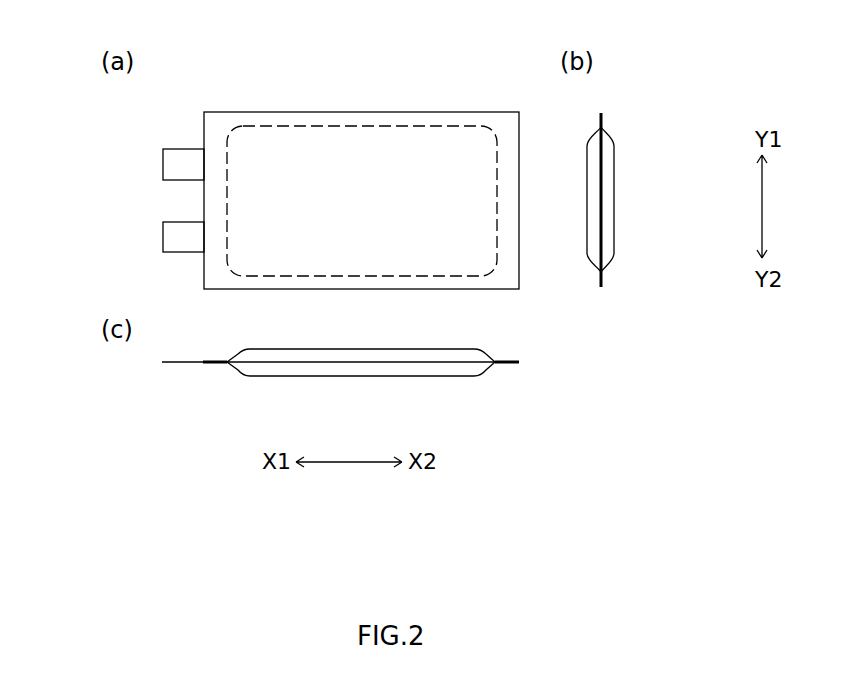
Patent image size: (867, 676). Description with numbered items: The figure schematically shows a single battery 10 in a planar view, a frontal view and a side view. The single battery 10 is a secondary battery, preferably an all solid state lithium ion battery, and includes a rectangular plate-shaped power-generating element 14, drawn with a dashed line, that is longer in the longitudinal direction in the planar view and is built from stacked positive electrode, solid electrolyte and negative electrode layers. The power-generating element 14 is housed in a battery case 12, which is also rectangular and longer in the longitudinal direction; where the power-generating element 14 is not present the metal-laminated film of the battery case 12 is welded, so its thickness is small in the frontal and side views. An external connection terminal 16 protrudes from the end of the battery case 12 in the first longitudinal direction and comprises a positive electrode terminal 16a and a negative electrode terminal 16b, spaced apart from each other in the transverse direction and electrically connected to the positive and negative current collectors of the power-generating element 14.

The single battery 10 is at (364, 244).
The battery case 12 is at (505, 276).
The power-generating element 14 is at (322, 143).
The external connection terminal 16 is at (121, 283).
The positive electrode terminal 16a is at (168, 171).
The negative electrode terminal 16b is at (147, 237).